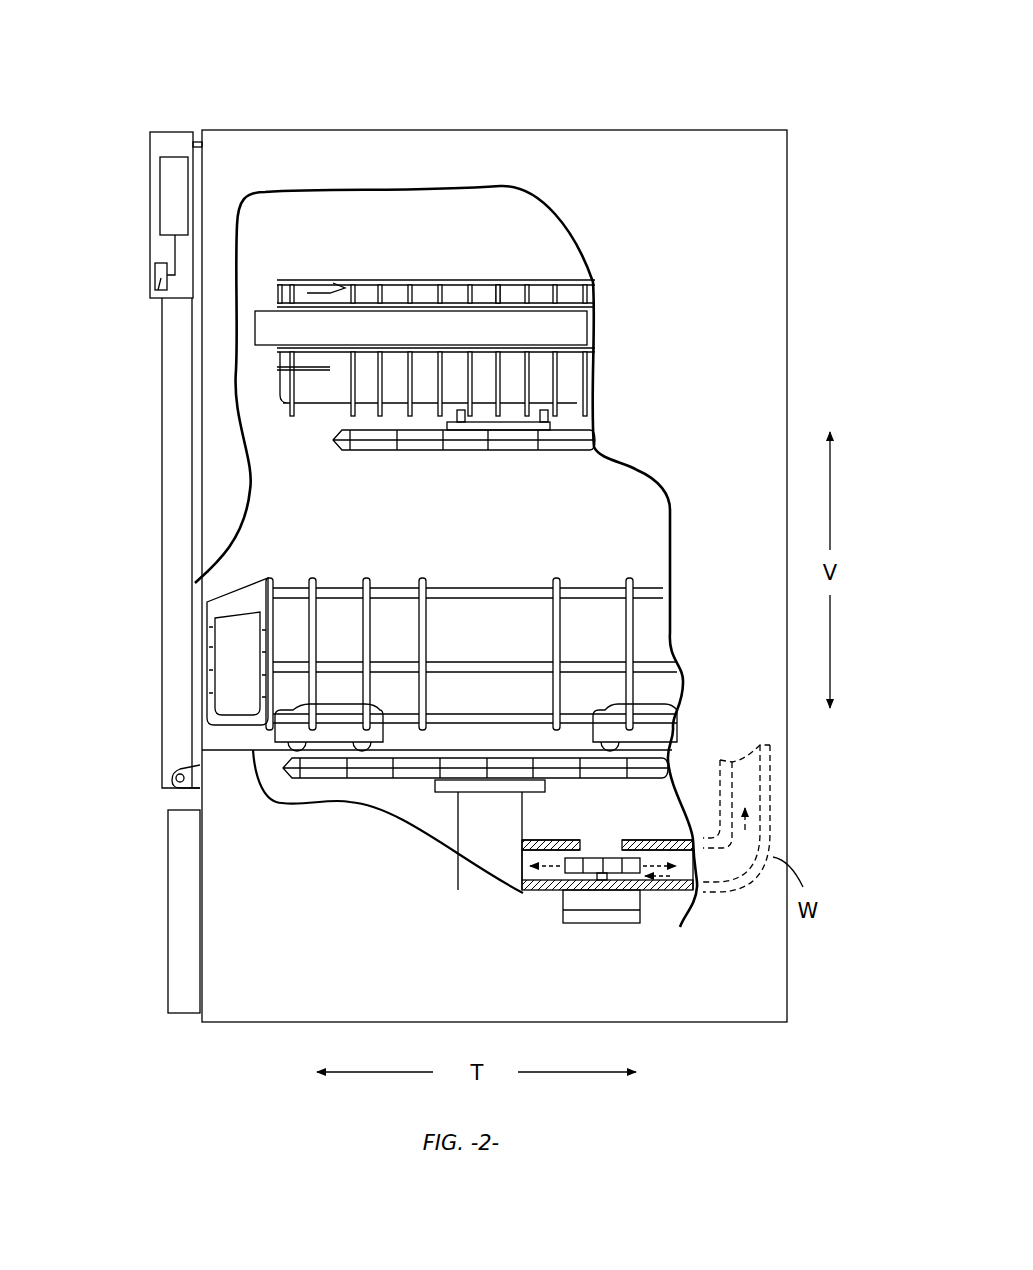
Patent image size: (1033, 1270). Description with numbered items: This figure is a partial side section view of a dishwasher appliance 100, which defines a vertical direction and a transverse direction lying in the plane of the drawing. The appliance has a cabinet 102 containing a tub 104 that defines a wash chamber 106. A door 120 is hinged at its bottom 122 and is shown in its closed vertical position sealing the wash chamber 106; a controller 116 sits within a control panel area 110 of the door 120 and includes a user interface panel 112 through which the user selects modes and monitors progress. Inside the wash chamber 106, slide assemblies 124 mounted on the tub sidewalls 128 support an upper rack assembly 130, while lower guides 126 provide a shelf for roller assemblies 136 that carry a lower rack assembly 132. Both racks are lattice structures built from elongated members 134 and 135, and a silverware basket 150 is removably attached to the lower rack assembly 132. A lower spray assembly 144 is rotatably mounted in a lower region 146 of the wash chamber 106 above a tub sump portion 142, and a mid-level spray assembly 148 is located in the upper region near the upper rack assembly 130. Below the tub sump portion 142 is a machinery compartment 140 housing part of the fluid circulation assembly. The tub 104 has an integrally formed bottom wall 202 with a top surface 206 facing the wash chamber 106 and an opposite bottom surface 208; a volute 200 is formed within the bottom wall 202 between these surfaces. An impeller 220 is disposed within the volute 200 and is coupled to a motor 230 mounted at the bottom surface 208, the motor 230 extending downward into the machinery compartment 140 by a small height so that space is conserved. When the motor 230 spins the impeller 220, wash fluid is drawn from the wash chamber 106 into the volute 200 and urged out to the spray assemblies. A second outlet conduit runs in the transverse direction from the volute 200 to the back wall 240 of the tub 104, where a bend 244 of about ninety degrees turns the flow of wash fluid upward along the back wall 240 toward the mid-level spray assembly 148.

The dishwasher appliance 100 is at (676, 94).
The cabinet 102 is at (765, 243).
The tub 104 is at (361, 537).
The wash chamber 106 is at (282, 508).
The control panel area 110 is at (142, 199).
The user interface panel 112 is at (157, 276).
The controller 116 is at (170, 172).
The door 120 is at (177, 452).
The bottom 122 is at (160, 792).
The slide assemblies 124 is at (467, 323).
The lower guides 126 is at (233, 753).
The tub sidewalls 128 is at (335, 223).
The upper rack assembly 130 is at (538, 266).
The lower rack assembly 132 is at (458, 581).
The elongated members 134 is at (318, 412).
The elongated members 135 is at (498, 300).
The roller assemblies 136 is at (660, 730).
The machinery compartment 140 is at (577, 931).
The tub sump portion 142 is at (452, 836).
The lower spray assembly 144 is at (362, 785).
The lower region 146 is at (578, 735).
The mid-level spray assembly 148 is at (467, 458).
The silverware basket 150 is at (225, 657).
The volute 200 is at (655, 892).
The bottom wall 202 is at (705, 830).
The top surface 206 is at (548, 838).
The bottom surface 208 is at (543, 892).
The impeller 220 is at (613, 865).
The motor 230 is at (573, 900).
The back wall 240 is at (770, 782).
The bend 244 is at (744, 890).